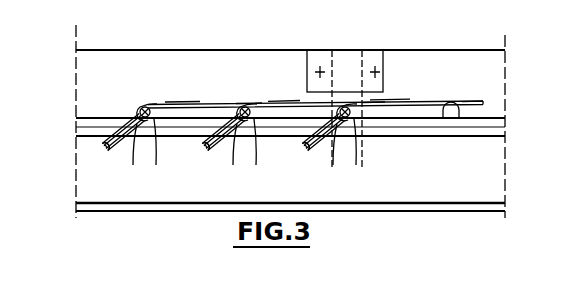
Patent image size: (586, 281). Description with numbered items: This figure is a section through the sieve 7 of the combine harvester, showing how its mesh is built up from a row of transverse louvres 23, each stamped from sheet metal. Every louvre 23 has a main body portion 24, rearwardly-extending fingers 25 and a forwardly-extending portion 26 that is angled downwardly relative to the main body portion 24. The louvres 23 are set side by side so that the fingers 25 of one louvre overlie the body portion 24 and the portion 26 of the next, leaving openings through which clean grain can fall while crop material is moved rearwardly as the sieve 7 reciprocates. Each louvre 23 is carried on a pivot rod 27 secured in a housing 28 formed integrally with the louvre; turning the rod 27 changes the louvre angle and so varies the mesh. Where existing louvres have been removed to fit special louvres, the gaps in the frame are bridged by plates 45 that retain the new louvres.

The sieve 7 is at (451, 101).
The transverse louvre 23 is at (140, 104).
The main body portion 24 is at (177, 102).
The rearwardly-extending fingers 25 is at (244, 102).
The forwardly-extending portion 26 is at (107, 130).
The pivot rod 27 is at (117, 152).
The housing 28 is at (150, 133).
The plate 45 is at (381, 60).